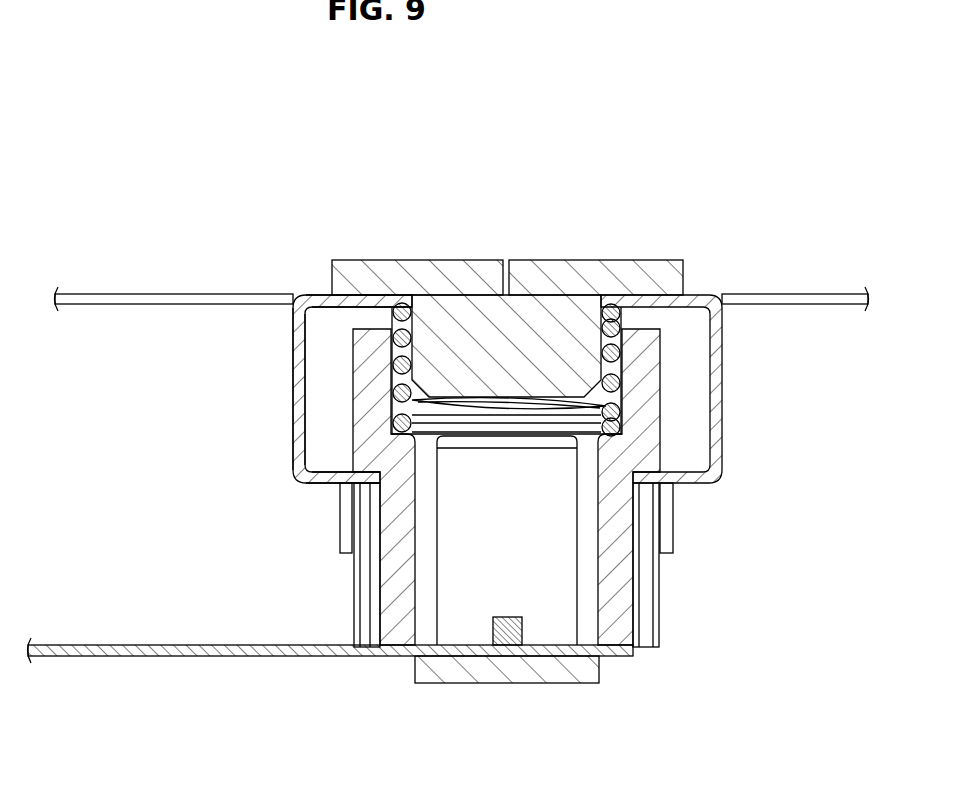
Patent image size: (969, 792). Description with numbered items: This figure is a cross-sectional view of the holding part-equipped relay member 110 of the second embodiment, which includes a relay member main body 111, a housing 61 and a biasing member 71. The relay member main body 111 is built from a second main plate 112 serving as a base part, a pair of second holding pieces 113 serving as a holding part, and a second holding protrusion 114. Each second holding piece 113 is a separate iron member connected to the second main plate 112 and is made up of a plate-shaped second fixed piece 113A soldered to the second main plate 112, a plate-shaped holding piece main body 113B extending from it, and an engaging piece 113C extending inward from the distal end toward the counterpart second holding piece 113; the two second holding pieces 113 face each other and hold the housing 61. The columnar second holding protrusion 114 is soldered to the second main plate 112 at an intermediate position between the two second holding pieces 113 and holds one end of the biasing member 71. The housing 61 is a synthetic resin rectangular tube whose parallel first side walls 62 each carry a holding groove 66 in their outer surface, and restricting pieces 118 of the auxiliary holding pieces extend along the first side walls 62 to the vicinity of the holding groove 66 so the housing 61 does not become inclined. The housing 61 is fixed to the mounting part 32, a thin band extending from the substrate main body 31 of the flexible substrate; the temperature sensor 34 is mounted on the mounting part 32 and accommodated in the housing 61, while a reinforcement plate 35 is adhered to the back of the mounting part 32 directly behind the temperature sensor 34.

The substrate main body 31 is at (108, 302).
The mounting part 32 is at (228, 652).
The temperature sensor 34 is at (507, 617).
The reinforcement plate 35 is at (468, 668).
The housing 61 is at (680, 373).
The first side wall 62 is at (640, 432).
The holding groove 66 is at (635, 590).
The biasing member 71 is at (611, 305).
The holding part-equipped relay member 110 is at (493, 432).
The relay member main body 111 is at (412, 298).
The second main plate 112 is at (405, 262).
The second holding piece 113 is at (277, 319).
The second fixed piece 113A is at (350, 292).
The holding piece main body 113B is at (290, 358).
The engaging piece 113C is at (330, 478).
The second holding protrusion 114 is at (470, 322).
The restricting piece 118 is at (673, 520).